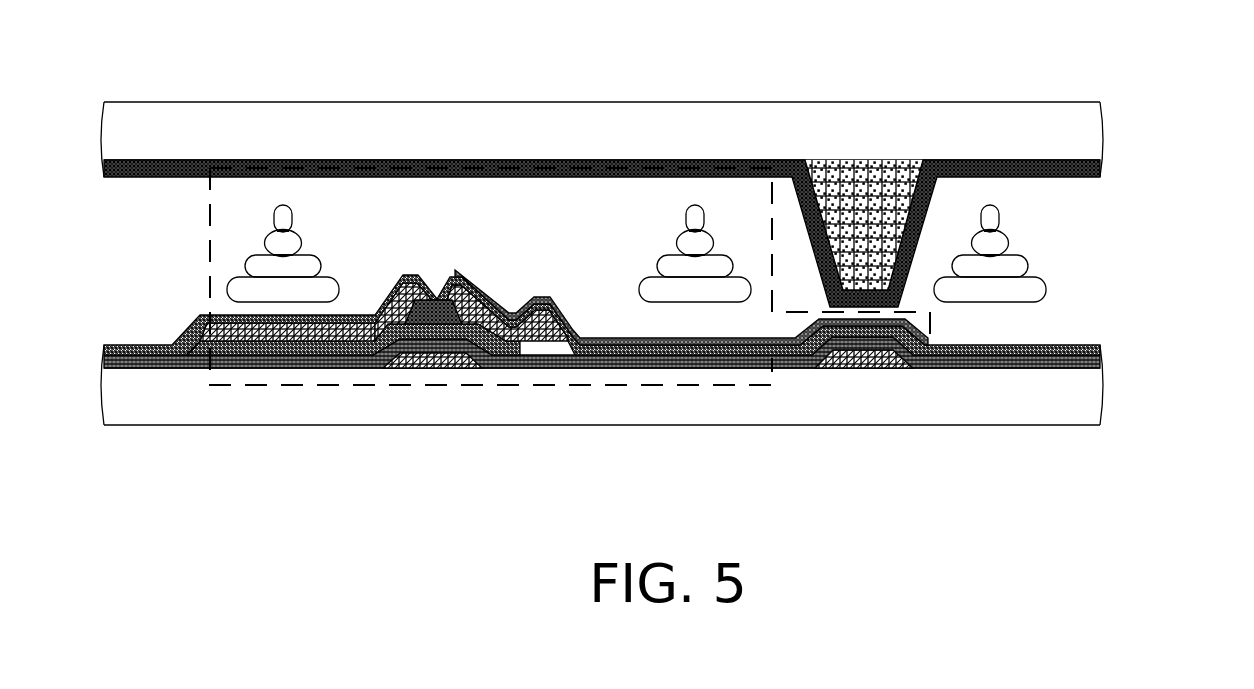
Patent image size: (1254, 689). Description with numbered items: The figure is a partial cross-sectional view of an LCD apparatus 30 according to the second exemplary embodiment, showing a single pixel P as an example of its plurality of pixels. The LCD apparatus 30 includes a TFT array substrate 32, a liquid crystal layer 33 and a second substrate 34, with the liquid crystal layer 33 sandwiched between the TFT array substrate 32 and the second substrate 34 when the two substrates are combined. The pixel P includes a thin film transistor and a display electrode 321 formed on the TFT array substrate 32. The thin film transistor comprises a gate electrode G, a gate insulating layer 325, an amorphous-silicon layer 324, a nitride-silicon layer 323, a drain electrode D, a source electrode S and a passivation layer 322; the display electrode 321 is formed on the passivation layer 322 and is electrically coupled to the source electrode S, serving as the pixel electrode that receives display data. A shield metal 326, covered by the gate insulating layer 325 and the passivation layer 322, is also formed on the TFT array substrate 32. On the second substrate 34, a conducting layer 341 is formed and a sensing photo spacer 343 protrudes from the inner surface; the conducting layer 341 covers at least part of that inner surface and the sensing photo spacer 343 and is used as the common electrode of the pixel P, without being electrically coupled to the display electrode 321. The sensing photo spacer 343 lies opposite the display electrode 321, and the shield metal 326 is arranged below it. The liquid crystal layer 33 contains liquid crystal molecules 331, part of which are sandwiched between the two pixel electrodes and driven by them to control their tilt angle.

The LCD apparatus 30 is at (683, 49).
The second substrate 34 is at (1113, 120).
The conducting layer 341 is at (1103, 165).
The sensing photo spacer 343 is at (866, 168).
The liquid crystal layer 33 is at (1060, 225).
The liquid crystal molecules 331 is at (1028, 266).
The TFT array substrate 32 is at (1115, 352).
The display electrode 321 is at (603, 337).
The passivation layer 322 is at (447, 292).
The nitride-silicon layer 323 is at (405, 311).
The amorphous-silicon layer 324 is at (320, 350).
The gate insulating layer 325 is at (363, 364).
The shield metal 326 is at (862, 372).
The gate electrode G is at (430, 372).
The source electrode S is at (508, 318).
The drain electrode D is at (373, 313).
The pixel P is at (210, 290).